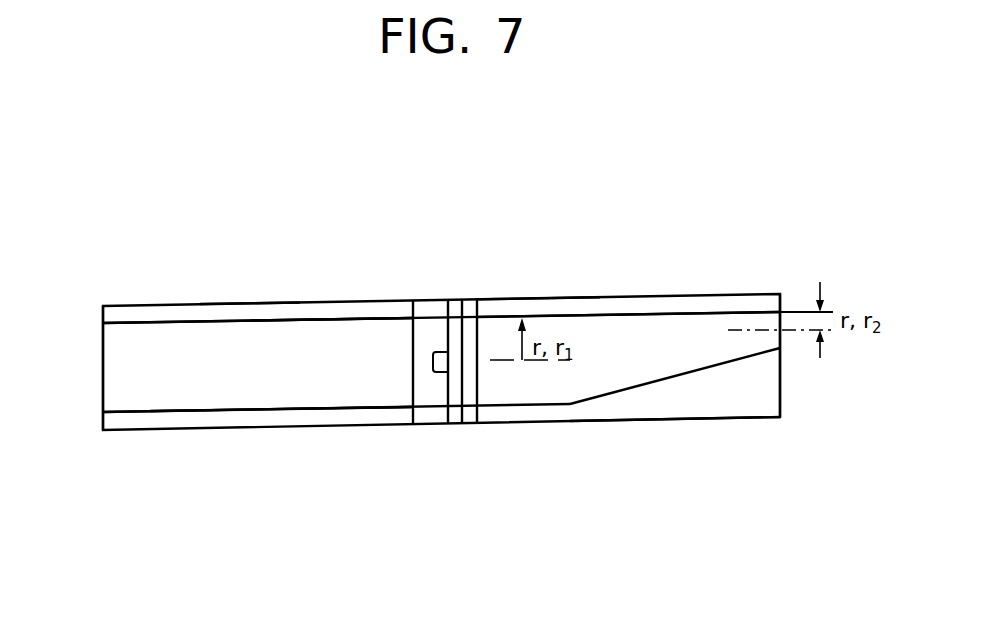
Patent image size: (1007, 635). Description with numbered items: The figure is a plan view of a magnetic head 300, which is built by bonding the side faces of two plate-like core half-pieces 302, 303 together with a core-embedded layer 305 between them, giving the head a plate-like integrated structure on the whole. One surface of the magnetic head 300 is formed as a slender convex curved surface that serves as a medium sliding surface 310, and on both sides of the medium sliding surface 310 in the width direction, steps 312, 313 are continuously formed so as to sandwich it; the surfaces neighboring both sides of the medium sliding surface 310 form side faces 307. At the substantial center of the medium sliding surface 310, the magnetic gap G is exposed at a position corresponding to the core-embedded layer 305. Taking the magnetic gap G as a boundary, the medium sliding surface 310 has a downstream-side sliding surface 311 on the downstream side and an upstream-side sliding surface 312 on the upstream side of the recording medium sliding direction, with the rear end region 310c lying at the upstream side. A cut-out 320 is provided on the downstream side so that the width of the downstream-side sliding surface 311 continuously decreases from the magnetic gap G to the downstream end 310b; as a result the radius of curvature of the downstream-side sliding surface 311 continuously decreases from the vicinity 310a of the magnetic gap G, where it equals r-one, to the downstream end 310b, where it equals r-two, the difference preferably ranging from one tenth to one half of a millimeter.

The magnetic head 300 is at (697, 276).
The core half-piece 302 is at (280, 427).
The core half-piece 303 is at (553, 423).
The core-embedded layer 305 is at (427, 423).
The side face 307 is at (168, 325).
The medium sliding surface 310 is at (368, 335).
The vicinity of the magnetic gap 310a is at (499, 335).
The downstream end 310b is at (763, 323).
The upper plate rear end 310c is at (120, 338).
The downstream-side sliding surface 311 is at (635, 330).
The step 312 is at (288, 338).
The step 313 is at (253, 313).
The cut-out 320 is at (688, 373).
The magnetic gap G is at (447, 356).